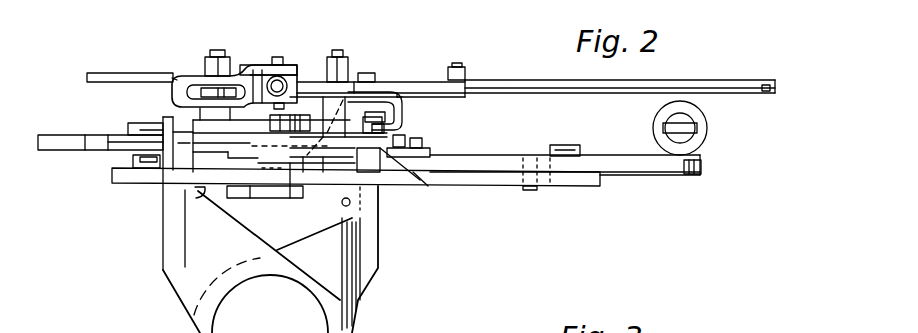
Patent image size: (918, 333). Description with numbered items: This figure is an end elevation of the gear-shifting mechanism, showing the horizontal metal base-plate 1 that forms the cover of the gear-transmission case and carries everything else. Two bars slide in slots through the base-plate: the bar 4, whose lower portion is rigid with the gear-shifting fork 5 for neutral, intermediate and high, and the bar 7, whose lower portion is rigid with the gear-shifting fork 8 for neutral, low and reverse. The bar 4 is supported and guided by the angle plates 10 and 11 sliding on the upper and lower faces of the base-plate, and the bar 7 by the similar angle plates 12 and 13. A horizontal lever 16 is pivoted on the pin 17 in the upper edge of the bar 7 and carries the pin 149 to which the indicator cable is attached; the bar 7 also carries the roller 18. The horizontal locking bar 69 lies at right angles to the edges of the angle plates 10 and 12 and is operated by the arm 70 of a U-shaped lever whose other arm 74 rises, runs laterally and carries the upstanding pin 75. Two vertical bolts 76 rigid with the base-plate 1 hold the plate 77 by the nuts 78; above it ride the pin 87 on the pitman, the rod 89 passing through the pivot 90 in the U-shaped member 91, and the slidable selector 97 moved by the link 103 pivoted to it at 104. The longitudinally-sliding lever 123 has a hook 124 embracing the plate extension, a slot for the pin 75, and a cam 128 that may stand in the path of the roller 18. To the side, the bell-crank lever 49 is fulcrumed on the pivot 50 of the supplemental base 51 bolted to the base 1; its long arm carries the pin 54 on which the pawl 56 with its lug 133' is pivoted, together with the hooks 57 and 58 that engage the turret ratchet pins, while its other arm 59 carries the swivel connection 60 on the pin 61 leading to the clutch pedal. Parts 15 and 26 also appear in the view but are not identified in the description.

The base-plate 1 is at (140, 183).
The bar 4 is at (182, 155).
The gear-shifting fork 5 is at (270, 259).
The bar 7 is at (388, 181).
The gear-shifting fork 8 is at (315, 245).
The angle plate 10 is at (179, 191).
The angle plate 11 is at (193, 212).
The angle plate 12 is at (360, 167).
The angle plate 13 is at (343, 193).
The block 15 is at (156, 168).
The horizontal lever 16 is at (440, 196).
The pin 17 is at (386, 110).
The roller 18 is at (383, 121).
The pin block 26 is at (256, 125).
The bell-crank lever 49 is at (505, 156).
The pivot 50 is at (570, 145).
The supplemental base 51 is at (493, 176).
The pin 54 is at (422, 138).
The pawl 56 is at (425, 150).
The hook 57 is at (73, 145).
The hook 58 is at (97, 148).
The arm 59 is at (650, 172).
The swivel connection 60 is at (655, 129).
The pin 61 is at (690, 158).
The horizontal locking bar 69 is at (286, 226).
The arm 70 is at (305, 192).
The arm 74 is at (387, 102).
The upstanding pin 75 is at (369, 73).
The vertical bolts 76 is at (218, 50).
The plate 77 is at (203, 73).
The nuts 78 is at (204, 57).
The pin 87 is at (234, 326).
The rod 89 is at (286, 77).
The pivot 90 is at (277, 57).
The U-shaped member 91 is at (249, 65).
The selector 97 is at (98, 73).
The link 103 is at (522, 80).
The pivot 104 is at (463, 64).
The longitudinally-sliding lever 123 is at (354, 82).
The hook 124 is at (172, 78).
The cam 128 is at (405, 126).
The lug 133' is at (100, 127).
The pin 149 is at (249, 108).